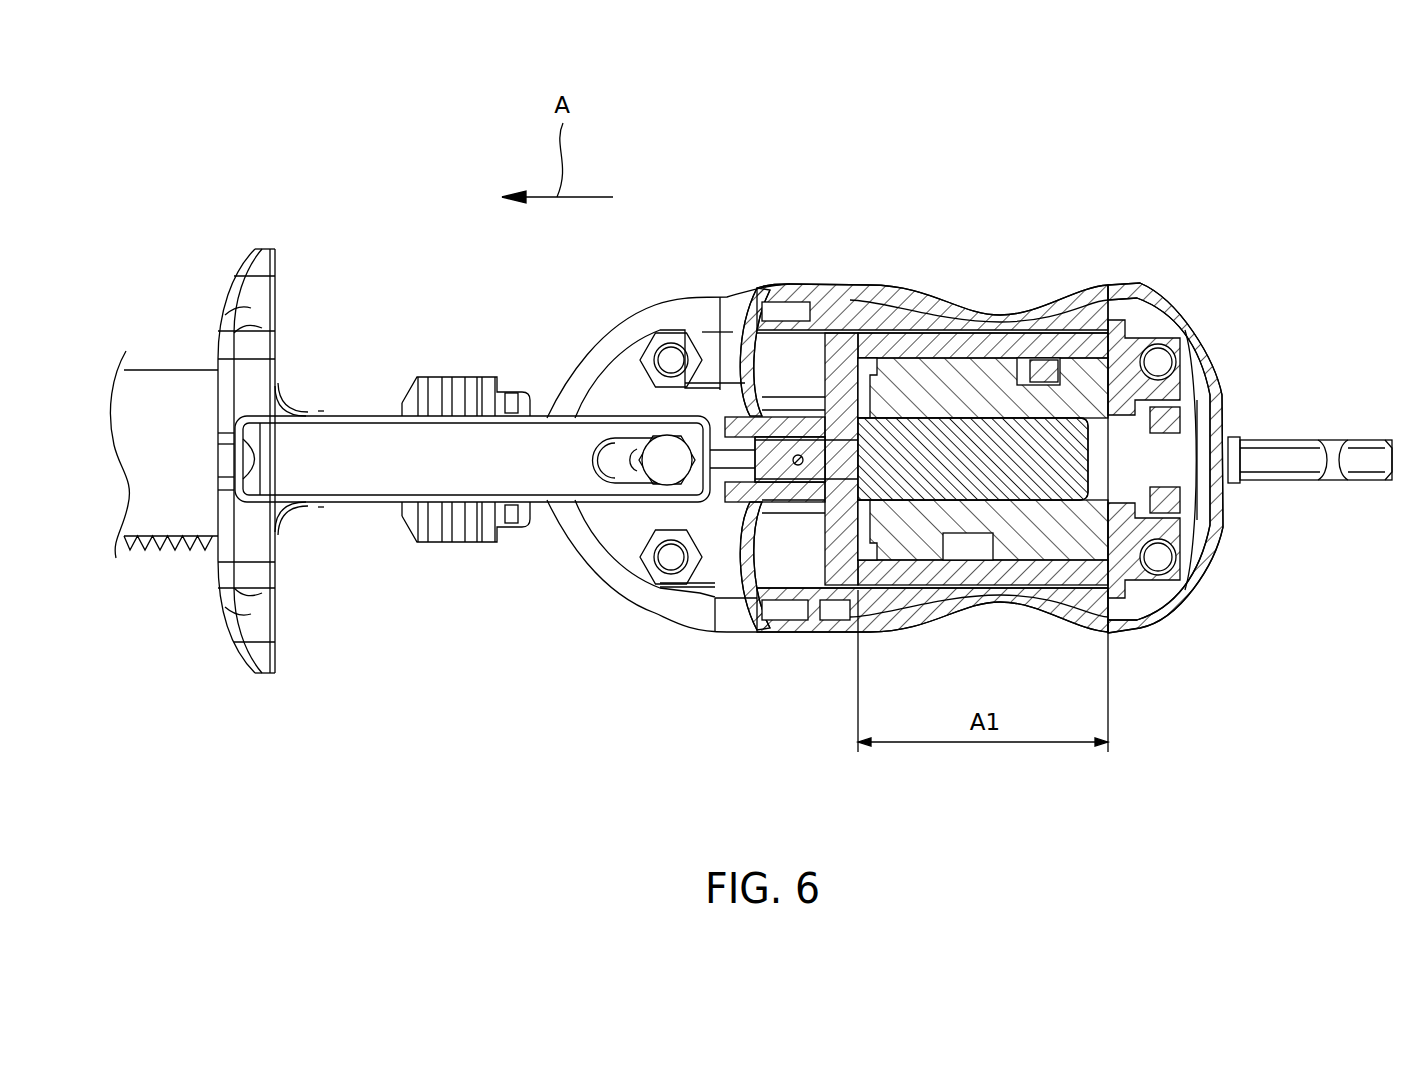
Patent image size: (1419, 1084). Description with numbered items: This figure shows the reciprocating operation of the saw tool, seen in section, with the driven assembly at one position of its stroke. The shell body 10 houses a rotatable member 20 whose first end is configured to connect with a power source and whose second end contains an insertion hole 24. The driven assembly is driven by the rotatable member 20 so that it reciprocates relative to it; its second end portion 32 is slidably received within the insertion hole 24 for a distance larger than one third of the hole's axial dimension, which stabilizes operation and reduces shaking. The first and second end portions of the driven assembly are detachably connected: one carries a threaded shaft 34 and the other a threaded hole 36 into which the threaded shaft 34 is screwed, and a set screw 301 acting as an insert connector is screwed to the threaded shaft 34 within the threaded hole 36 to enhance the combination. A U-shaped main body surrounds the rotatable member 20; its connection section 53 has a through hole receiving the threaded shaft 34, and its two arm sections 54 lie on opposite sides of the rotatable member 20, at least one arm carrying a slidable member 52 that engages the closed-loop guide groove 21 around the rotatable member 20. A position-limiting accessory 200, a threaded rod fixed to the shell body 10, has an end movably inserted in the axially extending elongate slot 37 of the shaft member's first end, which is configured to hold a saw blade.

The shell body 10 is at (813, 300).
The rotatable member 20 is at (975, 372).
The guide groove 21 is at (1032, 345).
The insertion hole 24 is at (1133, 428).
The second end portion 32 is at (1135, 625).
The threaded shaft 34 is at (803, 480).
The threaded hole 36 is at (731, 410).
The elongate slot 37 is at (623, 422).
The slidable member 52 is at (1040, 352).
The connection section 53 is at (822, 380).
The arm section 54 is at (920, 340).
The position-limiting accessory 200 is at (667, 472).
The set screw 301 is at (790, 475).